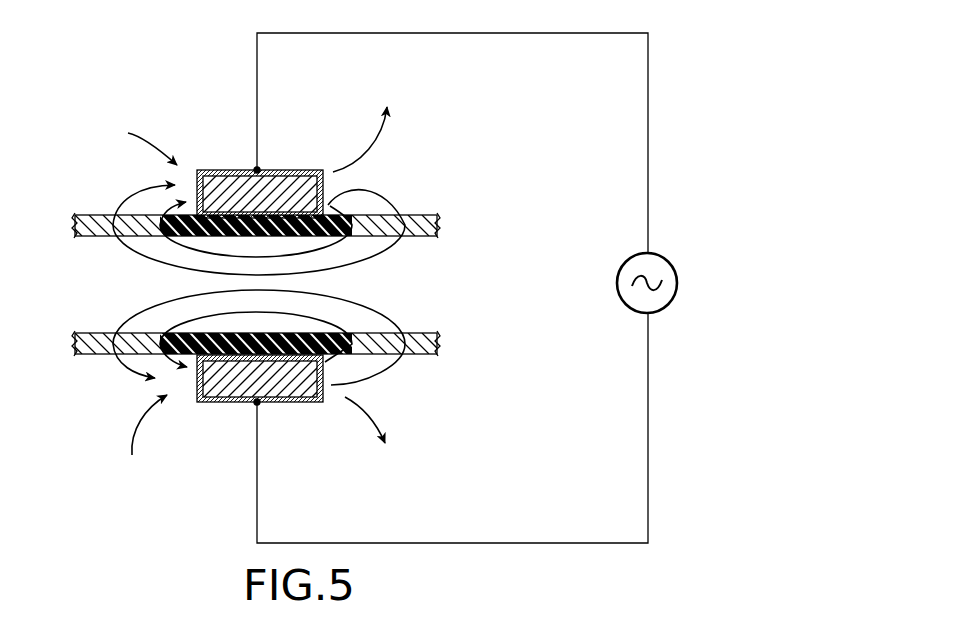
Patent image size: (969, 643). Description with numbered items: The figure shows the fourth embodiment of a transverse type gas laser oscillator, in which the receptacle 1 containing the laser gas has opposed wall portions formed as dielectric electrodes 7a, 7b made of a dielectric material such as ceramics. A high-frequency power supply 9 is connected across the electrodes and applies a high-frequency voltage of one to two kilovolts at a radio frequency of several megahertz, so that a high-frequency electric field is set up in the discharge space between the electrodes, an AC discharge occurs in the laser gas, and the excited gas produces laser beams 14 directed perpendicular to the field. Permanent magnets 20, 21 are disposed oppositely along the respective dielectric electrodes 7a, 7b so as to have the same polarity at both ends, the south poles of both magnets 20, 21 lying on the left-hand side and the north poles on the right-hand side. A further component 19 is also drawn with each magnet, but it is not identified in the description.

The receptacle 1 is at (434, 210).
The dielectric electrode 7a is at (280, 191).
The dielectric electrode 7b is at (281, 376).
The high-frequency power supply 9 is at (678, 283).
The laser beams 14 is at (358, 280).
The coil winding 19 is at (300, 170).
The permanent magnet 20 is at (238, 183).
The permanent magnet 21 is at (233, 394).